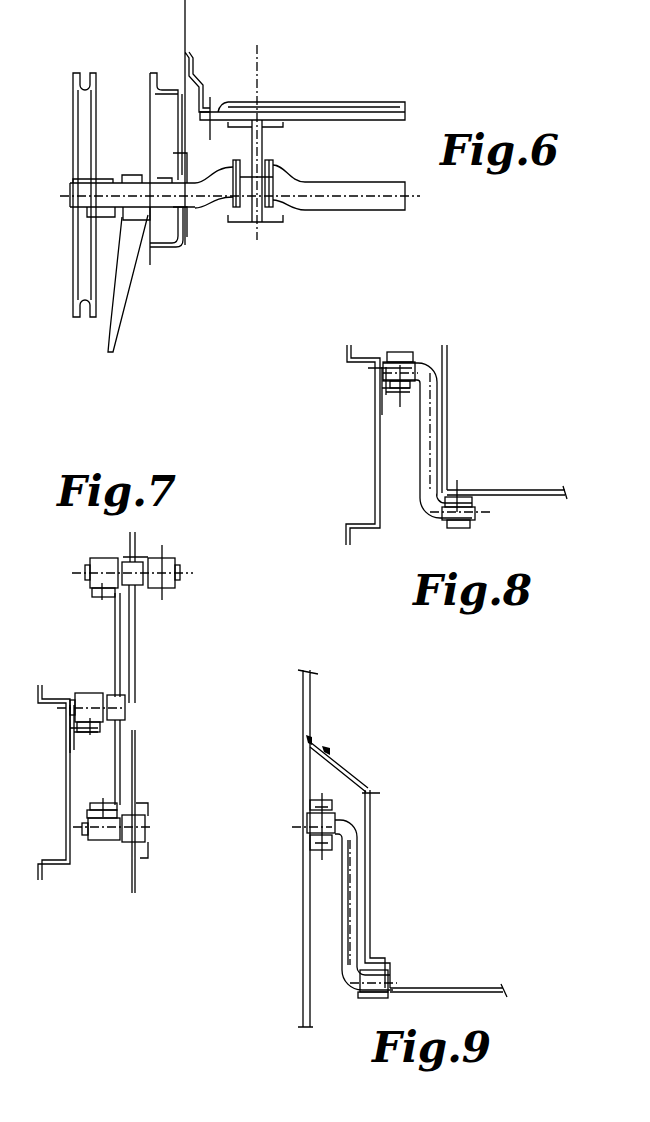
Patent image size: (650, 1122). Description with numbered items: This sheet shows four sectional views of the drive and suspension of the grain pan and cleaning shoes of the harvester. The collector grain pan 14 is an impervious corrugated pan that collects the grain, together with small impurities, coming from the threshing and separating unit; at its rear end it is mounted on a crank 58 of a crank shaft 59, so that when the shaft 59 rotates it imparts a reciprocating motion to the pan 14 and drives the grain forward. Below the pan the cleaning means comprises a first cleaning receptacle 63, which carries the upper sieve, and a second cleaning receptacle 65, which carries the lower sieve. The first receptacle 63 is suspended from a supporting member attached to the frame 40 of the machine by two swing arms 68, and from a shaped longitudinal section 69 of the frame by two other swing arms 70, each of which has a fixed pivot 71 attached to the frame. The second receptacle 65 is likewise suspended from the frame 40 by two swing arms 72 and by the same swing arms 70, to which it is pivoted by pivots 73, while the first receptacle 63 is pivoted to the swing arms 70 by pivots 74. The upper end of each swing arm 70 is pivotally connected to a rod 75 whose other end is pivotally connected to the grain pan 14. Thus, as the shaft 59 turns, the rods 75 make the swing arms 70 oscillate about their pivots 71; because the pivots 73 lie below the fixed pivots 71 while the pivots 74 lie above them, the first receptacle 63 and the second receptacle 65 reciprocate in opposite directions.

In FIG. 6, the collector grain pan 14 is at (365, 84).
In FIG. 6, the frame 40 is at (177, 45).
In FIG. 9, the frame 40 is at (303, 975).
In FIG. 6, the crank 58 is at (277, 172).
In FIG. 6, the crank shaft 59 is at (367, 204).
In FIG. 9, the first cleaning receptacle 63 is at (476, 972).
In FIG. 8, the second cleaning receptacle 65 is at (550, 471).
In FIG. 9, the swing arm 68 is at (353, 892).
In FIG. 7, the shaped longitudinal section 69 is at (65, 802).
In FIG. 8, the shaped longitudinal section 69 is at (375, 473).
In FIG. 7, the swing arm 70 is at (118, 753).
In FIG. 7, the pivot 71 is at (90, 693).
In FIG. 8, the swing arm 72 is at (435, 418).
In FIG. 7, the pivot 73 is at (100, 830).
In FIG. 7, the pivot 74 is at (100, 572).
In FIG. 7, the rod 75 is at (172, 560).